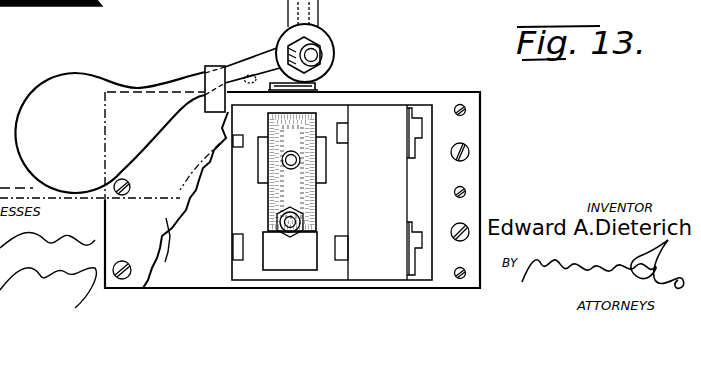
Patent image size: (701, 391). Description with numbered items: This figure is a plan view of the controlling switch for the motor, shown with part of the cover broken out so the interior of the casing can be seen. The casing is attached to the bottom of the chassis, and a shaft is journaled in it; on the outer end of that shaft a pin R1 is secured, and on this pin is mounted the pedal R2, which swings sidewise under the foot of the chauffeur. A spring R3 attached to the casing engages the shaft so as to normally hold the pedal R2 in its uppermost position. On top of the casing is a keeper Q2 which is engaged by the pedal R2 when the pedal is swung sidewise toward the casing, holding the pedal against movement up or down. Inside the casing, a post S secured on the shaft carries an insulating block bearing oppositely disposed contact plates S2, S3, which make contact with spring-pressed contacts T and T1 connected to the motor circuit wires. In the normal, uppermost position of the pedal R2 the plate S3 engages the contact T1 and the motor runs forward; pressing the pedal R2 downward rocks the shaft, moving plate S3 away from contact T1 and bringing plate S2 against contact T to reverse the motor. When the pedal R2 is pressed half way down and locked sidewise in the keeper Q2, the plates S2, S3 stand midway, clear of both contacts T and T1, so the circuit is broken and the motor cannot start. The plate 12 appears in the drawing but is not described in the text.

The base plate 12 is at (352, 137).
The pedal R2 is at (133, 87).
The keeper Q2 is at (212, 112).
The pin R1 is at (323, 55).
The spring R3 is at (315, 88).
The post S is at (290, 228).
The contact plate S2 is at (263, 157).
The contact plate S3 is at (326, 157).
The spring-pressed contact T is at (237, 135).
The spring-pressed contact T1 is at (343, 132).